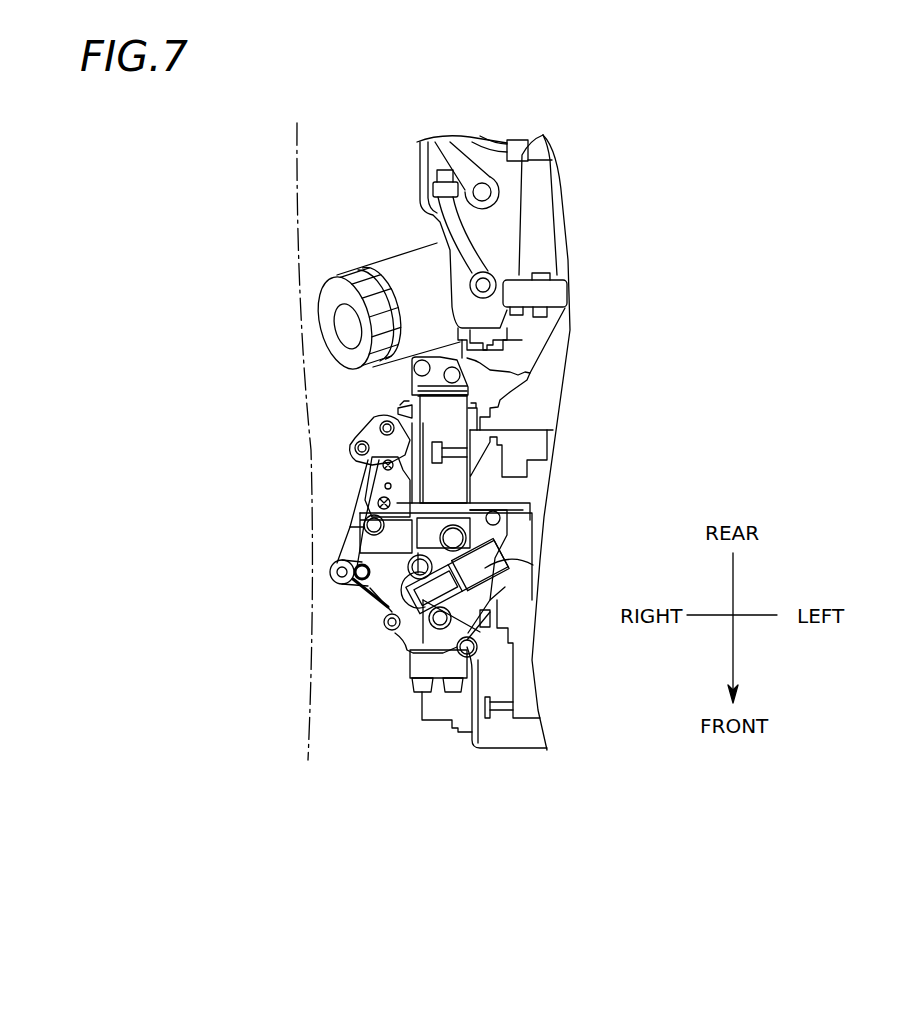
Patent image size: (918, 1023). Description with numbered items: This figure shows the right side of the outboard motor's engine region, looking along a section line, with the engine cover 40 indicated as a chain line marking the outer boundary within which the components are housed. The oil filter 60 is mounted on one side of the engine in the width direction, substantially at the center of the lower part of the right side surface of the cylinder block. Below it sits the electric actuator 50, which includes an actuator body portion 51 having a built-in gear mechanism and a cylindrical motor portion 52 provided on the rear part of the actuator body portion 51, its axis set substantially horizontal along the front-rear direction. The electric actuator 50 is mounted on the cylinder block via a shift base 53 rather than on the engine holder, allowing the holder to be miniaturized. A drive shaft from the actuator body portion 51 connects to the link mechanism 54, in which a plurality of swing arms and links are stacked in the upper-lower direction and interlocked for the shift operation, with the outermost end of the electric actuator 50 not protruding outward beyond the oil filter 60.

The engine cover 40 is at (300, 670).
The electric actuator 50 is at (357, 600).
The actuator body portion 51 is at (385, 602).
The cylindrical motor portion 52 is at (447, 490).
The shift base 53 is at (412, 660).
The link mechanism 54 is at (357, 505).
The oil filter 60 is at (326, 330).